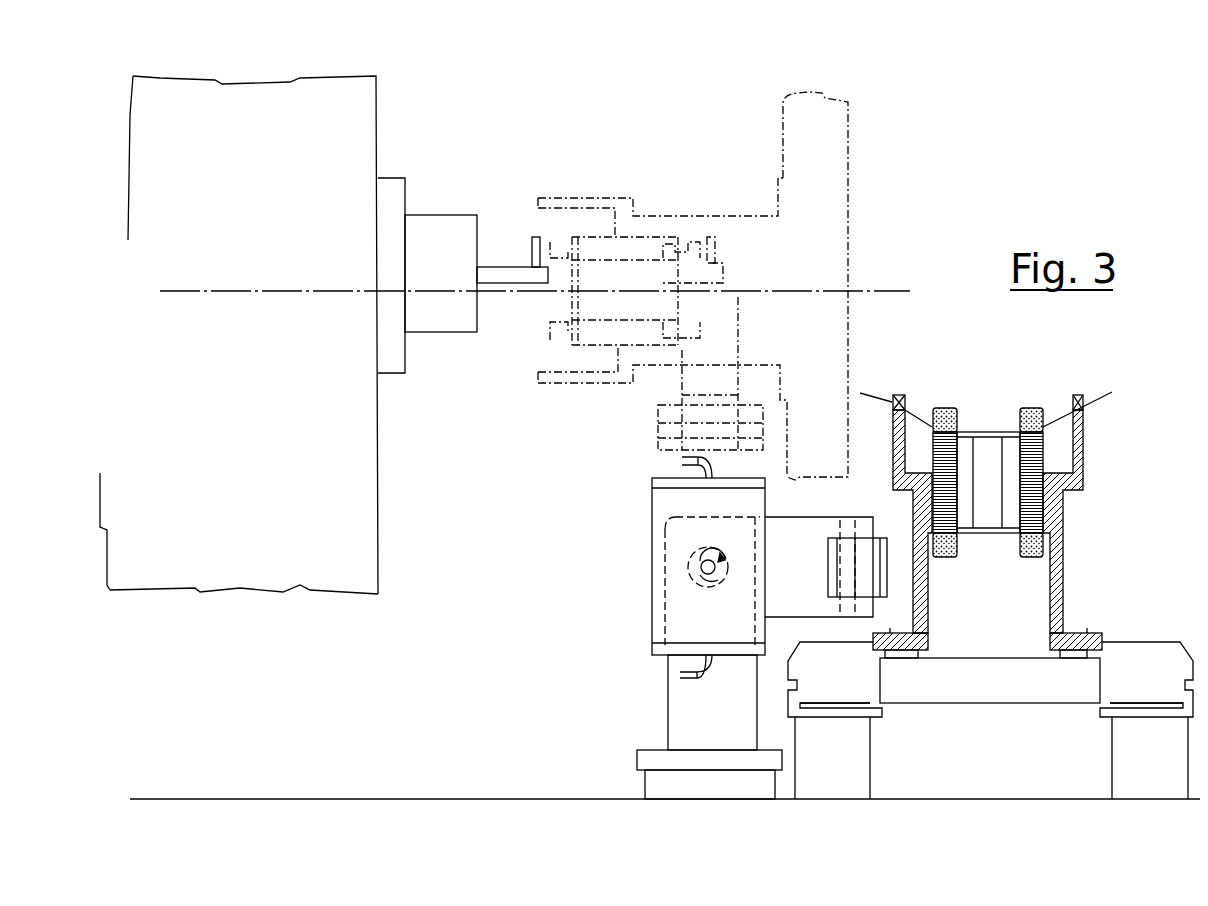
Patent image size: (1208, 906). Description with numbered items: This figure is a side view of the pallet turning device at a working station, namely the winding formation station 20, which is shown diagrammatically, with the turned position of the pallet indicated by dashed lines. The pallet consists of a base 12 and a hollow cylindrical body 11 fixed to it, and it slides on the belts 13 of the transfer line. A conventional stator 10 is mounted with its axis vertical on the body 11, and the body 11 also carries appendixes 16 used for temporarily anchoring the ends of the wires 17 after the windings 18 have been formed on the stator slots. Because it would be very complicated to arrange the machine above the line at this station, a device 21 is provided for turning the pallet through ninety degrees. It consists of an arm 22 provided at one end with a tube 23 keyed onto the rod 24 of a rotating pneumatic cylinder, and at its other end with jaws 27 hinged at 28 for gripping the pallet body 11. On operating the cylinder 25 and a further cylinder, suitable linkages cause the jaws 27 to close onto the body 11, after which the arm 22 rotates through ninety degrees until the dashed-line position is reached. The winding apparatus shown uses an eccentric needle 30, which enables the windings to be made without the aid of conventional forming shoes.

The stator 10 is at (585, 378).
The hollow cylindrical body 11 is at (742, 228).
The base 12 is at (838, 160).
The belts 13 is at (1140, 705).
The appendixes 16 is at (600, 200).
The wires 17 is at (1057, 410).
The windings 18 is at (945, 405).
The winding formation station 20 is at (315, 570).
The loading device 21 is at (633, 605).
The arm 22 is at (753, 455).
The tube 23 is at (690, 573).
The rod 24 is at (705, 565).
The cylinder 25 is at (677, 627).
The jaws 27 is at (718, 375).
The hinge 28 is at (660, 440).
The eccentric needle 30 is at (505, 272).